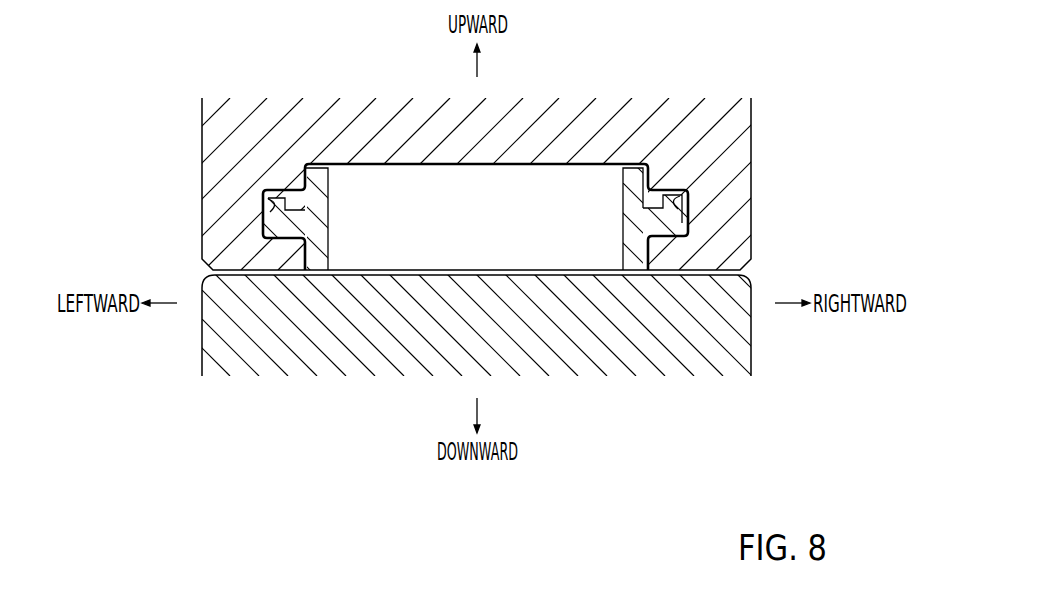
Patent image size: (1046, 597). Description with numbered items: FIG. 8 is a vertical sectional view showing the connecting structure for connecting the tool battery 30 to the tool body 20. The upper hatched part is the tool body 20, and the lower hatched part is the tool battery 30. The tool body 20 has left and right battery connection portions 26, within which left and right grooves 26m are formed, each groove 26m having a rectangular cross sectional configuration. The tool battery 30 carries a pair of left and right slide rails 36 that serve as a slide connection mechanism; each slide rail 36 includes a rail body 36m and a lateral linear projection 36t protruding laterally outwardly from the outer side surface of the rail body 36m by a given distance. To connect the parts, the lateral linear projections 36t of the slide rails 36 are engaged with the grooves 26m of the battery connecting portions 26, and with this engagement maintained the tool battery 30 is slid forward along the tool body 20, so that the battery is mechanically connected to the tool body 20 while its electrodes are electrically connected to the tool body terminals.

The tool body 20 is at (688, 75).
The battery connection portion 26 is at (762, 165).
The groove 26m is at (263, 198).
The tool battery 30 is at (762, 338).
The slide rail 36 is at (345, 217).
The rail body 36m is at (322, 247).
The lateral linear projection 36t is at (288, 221).